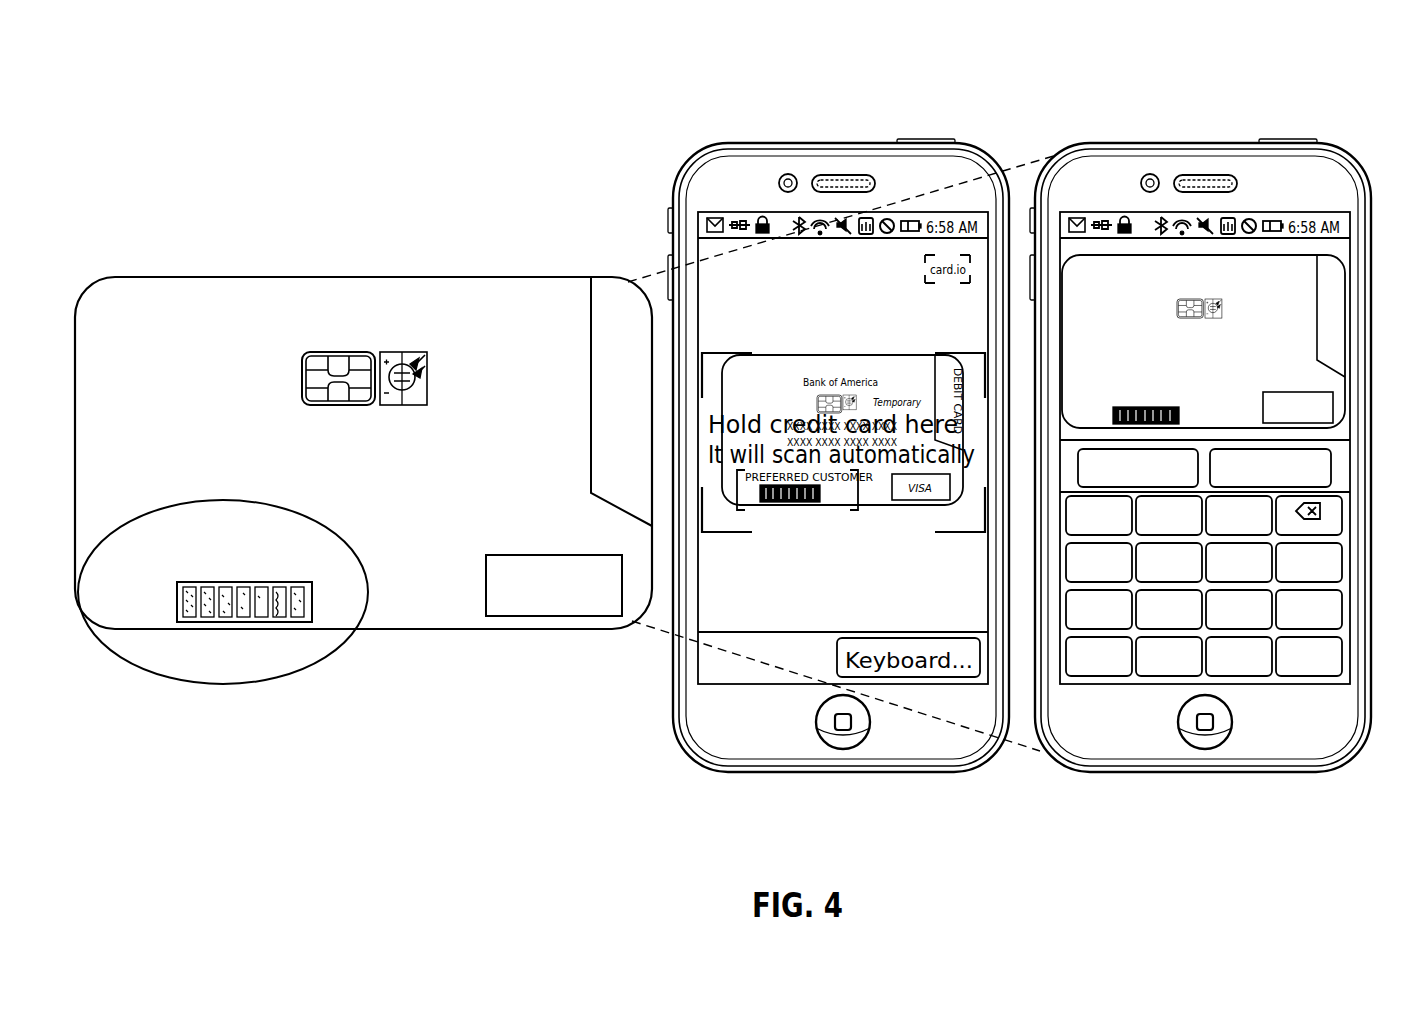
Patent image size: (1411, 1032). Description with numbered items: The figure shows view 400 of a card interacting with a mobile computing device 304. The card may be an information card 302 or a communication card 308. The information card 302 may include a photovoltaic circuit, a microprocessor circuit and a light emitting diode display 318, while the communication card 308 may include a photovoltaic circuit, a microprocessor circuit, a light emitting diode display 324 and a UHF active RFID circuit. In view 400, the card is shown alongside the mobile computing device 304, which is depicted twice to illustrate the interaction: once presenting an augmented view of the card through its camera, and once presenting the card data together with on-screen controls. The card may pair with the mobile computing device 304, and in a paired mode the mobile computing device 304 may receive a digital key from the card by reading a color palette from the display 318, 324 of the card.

The view 400 is at (165, 64).
The information card 302 is at (215, 275).
The communication card 308 is at (215, 275).
The light emitting diode display 318 is at (232, 622).
The light emitting diode display 324 is at (232, 622).
The mobile computing device 304 is at (1355, 166).